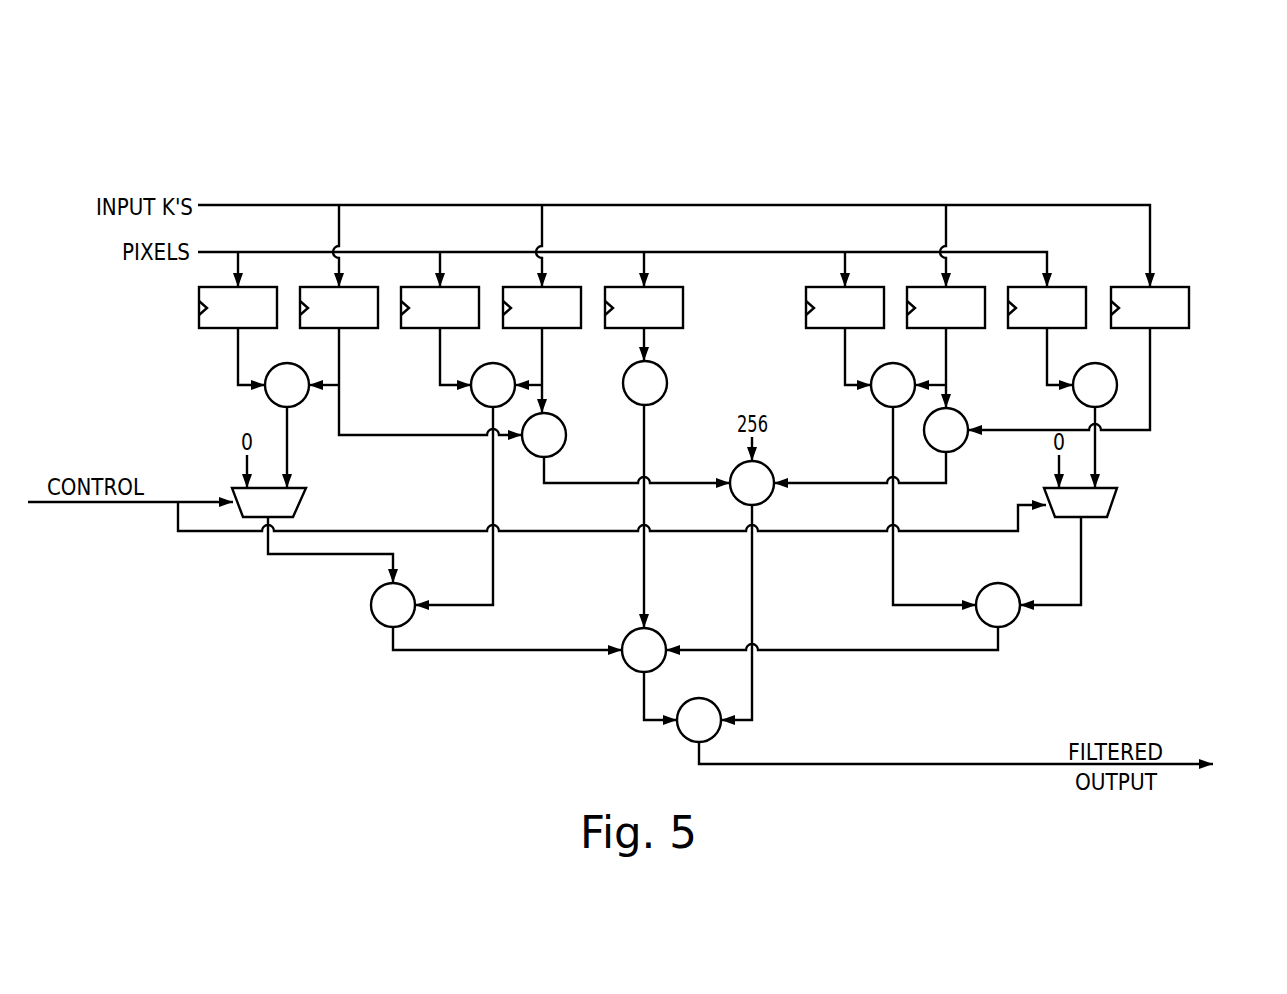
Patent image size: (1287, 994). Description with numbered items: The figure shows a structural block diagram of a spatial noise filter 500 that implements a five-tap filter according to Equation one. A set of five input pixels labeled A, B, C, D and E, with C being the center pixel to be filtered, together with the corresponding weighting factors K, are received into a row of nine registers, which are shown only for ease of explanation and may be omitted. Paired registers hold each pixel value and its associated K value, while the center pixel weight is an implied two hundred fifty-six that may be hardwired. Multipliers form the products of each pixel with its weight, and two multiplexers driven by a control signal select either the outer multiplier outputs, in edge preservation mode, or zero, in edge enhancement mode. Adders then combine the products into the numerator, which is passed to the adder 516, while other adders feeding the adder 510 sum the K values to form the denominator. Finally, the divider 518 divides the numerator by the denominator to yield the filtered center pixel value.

The spatial noise filter 500 is at (1040, 78).
The adder 510 is at (733, 496).
The adder 516 is at (628, 667).
The divider 518 is at (684, 738).